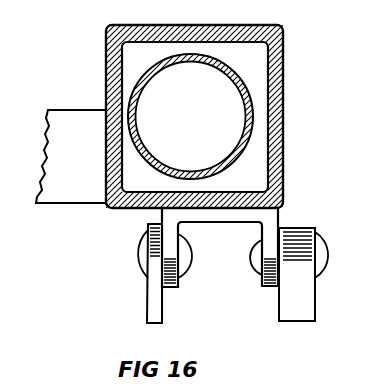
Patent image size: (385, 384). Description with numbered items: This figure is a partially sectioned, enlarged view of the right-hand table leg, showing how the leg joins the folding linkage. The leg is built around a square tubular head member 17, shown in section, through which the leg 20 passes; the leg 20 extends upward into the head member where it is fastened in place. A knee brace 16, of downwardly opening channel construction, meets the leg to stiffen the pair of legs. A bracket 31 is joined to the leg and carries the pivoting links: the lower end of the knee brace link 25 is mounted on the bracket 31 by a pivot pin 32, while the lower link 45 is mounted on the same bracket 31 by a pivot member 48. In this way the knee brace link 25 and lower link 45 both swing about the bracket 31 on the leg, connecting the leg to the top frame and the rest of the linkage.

The knee brace 16 is at (85, 190).
The square tubular head member 17 is at (283, 116).
The leg 20 is at (138, 100).
The knee brace link 25 is at (298, 307).
The bracket 31 is at (272, 222).
The pivot pin 32 is at (320, 253).
The lower link 45 is at (157, 288).
The pivot member 48 is at (140, 253).